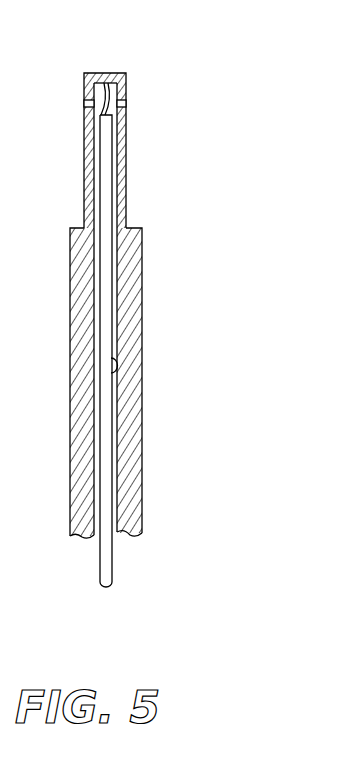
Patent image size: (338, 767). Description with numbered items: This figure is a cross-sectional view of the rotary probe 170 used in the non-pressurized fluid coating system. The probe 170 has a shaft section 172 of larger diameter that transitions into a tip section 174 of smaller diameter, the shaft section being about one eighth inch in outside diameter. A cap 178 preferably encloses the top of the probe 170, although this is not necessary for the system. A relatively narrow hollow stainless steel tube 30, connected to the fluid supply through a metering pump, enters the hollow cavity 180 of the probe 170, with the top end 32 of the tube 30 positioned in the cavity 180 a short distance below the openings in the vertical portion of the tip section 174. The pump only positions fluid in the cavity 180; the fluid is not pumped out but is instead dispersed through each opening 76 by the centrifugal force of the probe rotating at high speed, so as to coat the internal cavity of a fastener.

The rotary probe 170 is at (134, 305).
The shaft section 172 is at (148, 507).
The tip section 174 is at (123, 125).
The cap 178 is at (92, 73).
The hollow cavity 180 is at (113, 374).
The opening 76 is at (87, 104).
The top end 32 is at (102, 73).
The hollow stainless steel tube 30 is at (112, 428).